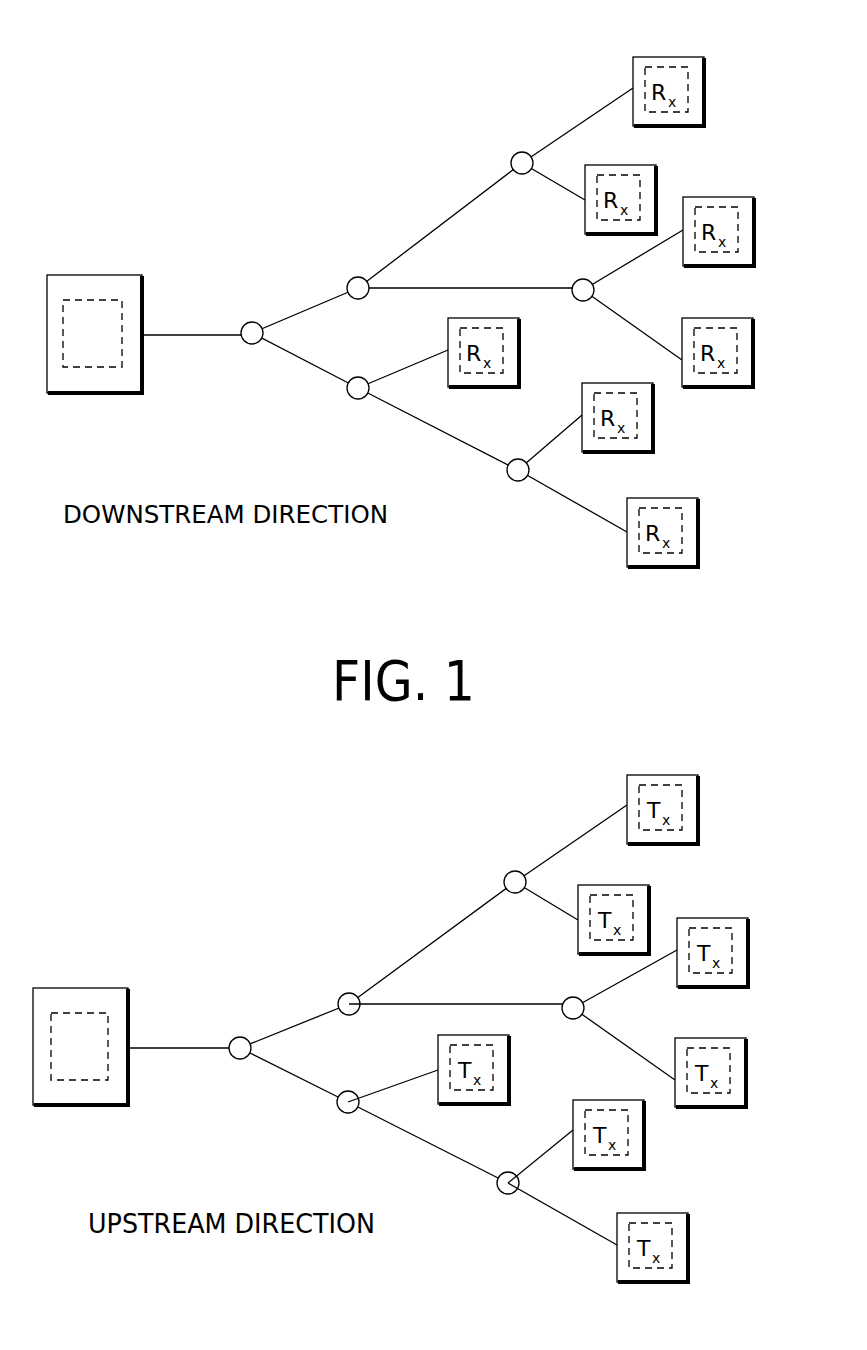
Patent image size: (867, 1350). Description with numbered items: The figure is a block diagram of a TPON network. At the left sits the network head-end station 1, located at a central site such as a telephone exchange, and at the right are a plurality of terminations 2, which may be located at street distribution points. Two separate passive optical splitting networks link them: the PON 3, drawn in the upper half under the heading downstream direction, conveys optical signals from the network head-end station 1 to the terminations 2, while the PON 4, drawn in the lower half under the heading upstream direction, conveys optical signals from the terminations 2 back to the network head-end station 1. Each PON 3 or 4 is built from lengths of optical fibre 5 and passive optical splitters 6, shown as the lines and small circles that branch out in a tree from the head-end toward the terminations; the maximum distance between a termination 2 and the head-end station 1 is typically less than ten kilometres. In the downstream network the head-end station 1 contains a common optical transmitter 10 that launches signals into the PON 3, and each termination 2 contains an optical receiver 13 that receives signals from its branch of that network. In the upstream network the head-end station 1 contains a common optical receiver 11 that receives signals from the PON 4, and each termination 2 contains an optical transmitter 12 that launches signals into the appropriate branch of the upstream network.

The network head-end station 1 is at (86, 275).
The terminations 2 is at (680, 57).
The passive optical splitting network 3 is at (412, 655).
The passive optical splitting network 4 is at (405, 938).
The lengths of optical fibre 5 is at (338, 296).
The passive optical splitters 6 is at (257, 342).
The common optical transmitter 10 is at (93, 368).
The common optical receiver 11 is at (80, 1080).
The optical transmitter 12 is at (682, 800).
The optical receiver 13 is at (688, 72).